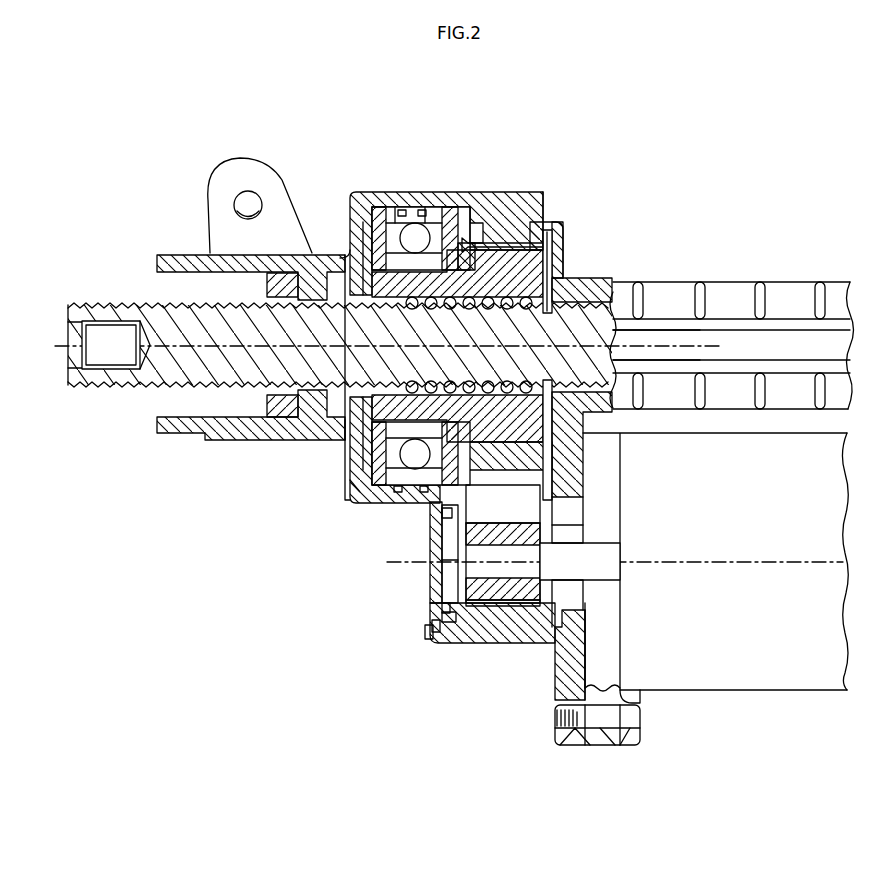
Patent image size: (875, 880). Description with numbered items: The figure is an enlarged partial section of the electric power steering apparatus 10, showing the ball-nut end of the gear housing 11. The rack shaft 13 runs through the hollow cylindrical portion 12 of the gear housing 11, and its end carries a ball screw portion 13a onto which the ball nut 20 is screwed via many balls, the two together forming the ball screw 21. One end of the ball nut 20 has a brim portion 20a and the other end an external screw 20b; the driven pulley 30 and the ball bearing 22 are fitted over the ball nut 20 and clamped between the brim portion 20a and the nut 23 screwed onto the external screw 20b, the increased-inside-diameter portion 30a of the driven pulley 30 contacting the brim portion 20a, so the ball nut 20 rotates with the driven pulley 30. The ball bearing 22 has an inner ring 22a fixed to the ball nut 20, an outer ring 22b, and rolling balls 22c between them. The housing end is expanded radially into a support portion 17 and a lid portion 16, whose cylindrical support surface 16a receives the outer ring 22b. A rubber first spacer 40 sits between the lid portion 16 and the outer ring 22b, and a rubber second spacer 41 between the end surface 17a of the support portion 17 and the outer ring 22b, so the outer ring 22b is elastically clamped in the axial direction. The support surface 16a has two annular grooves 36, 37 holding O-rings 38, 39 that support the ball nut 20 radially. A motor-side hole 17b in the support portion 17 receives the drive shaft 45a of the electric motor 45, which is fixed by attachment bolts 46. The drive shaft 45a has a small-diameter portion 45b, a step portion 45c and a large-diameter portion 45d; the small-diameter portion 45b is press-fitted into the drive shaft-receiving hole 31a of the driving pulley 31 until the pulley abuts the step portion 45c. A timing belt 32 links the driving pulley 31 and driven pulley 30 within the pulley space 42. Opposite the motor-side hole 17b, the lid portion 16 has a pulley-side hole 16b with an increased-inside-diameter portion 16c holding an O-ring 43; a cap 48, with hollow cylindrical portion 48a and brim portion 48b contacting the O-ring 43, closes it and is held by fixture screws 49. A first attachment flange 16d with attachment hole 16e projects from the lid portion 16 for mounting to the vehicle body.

The electric power steering apparatus 10 is at (728, 289).
The gear housing 11 is at (748, 280).
The hollow cylindrical portion 12 is at (602, 278).
The rack shaft 13 is at (340, 346).
The ball screw portion 13a is at (118, 300).
The lid portion 16 is at (328, 429).
The support surface 16a is at (345, 497).
The pulley-side hole 16b is at (448, 624).
The increased-inside-diameter portion 16c is at (428, 640).
The first attachment flange 16d is at (250, 170).
The attachment hole 16e is at (246, 197).
The support portion 17 is at (530, 439).
The end surface 17a is at (436, 540).
The motor-side hole 17b is at (586, 603).
The ball nut 20 is at (462, 340).
The brim portion 20a is at (566, 226).
The external screw 20b is at (350, 262).
The ball screw 21 is at (552, 302).
The ball bearing 22 is at (445, 295).
The inner ring 22a is at (466, 245).
The outer ring 22b is at (395, 212).
The ball 22c is at (420, 212).
The nut 23 is at (350, 440).
The driven pulley 30 is at (529, 337).
The increased-inside-diameter portion 30a is at (610, 300).
The driving pulley 31 is at (504, 602).
The drive shaft-receiving hole 31a is at (530, 545).
The timing belt 32 is at (518, 606).
The annular groove 36 is at (396, 493).
The annular groove 37 is at (423, 493).
The O-ring 38 is at (400, 209).
The O-ring 39 is at (445, 196).
The first spacer 40 is at (352, 488).
The second spacer 41 is at (446, 210).
The pulley space 42 is at (478, 213).
The O-ring 43 is at (446, 615).
The electric motor 45 is at (685, 604).
The drive shaft 45a is at (553, 582).
The small-diameter portion 45b is at (556, 530).
The step portion 45c is at (550, 562).
The large-diameter portion 45d is at (585, 578).
The attachment bolts 46 is at (628, 745).
The cap 48 is at (405, 581).
The hollow cylindrical portion 48a is at (438, 578).
The brim portion 48b is at (450, 575).
The fixture screws 49 is at (436, 634).